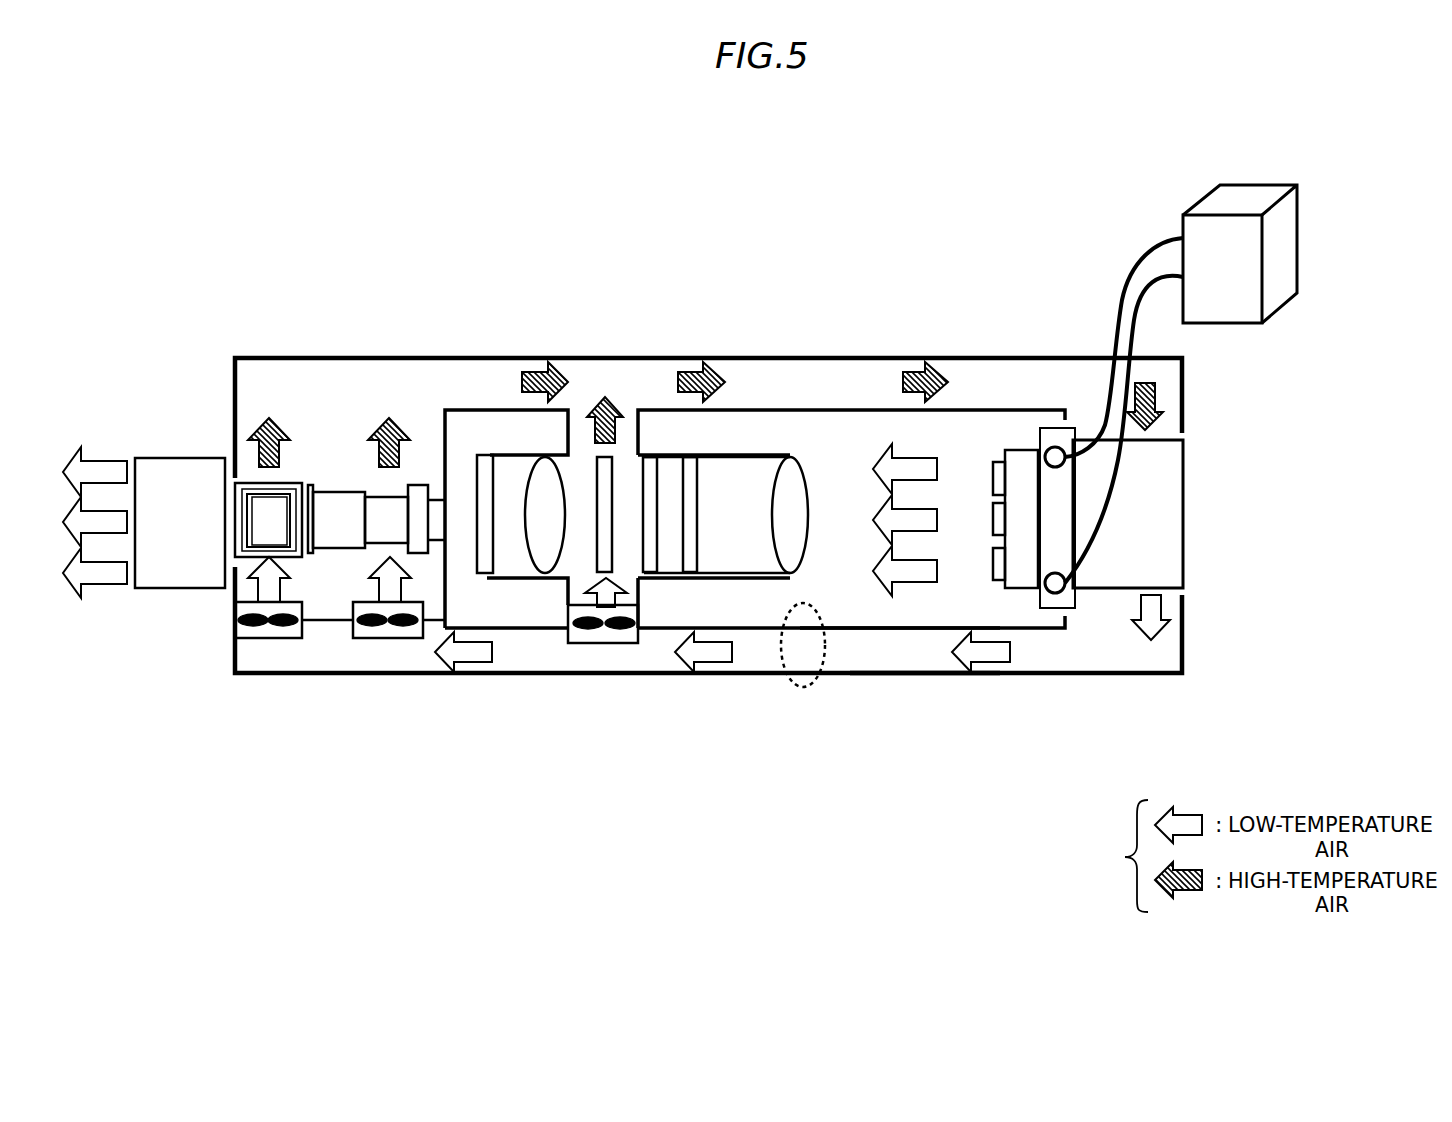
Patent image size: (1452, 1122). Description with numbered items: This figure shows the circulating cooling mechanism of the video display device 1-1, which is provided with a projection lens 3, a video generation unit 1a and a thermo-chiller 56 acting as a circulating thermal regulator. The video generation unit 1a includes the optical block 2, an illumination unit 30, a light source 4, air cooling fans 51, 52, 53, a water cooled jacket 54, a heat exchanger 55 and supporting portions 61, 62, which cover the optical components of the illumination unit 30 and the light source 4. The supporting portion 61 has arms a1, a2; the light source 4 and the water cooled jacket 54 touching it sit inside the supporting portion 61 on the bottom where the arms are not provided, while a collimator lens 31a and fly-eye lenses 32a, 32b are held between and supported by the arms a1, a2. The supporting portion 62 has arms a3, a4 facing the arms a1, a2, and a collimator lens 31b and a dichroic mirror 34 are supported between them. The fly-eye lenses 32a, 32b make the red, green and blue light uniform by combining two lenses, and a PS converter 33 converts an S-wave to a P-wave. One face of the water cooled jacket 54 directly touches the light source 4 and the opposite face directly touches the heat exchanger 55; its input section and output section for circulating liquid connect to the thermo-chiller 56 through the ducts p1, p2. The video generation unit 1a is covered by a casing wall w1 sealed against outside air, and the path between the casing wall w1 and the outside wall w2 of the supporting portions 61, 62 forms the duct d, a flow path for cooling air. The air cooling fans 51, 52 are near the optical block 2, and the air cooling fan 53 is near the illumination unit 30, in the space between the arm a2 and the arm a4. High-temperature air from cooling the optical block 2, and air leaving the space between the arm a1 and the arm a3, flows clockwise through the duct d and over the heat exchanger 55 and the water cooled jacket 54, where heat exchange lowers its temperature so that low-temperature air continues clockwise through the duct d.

The video display device 1-1 is at (310, 168).
The video generation unit 1a is at (234, 358).
The optical block 2 is at (325, 565).
The projection lens 3 is at (167, 590).
The light source 4 is at (1005, 450).
The illumination unit 30 is at (572, 560).
The collimator lens 31a is at (758, 455).
The collimator lens 31b is at (535, 472).
The fly-eye lens 32a is at (683, 457).
The fly-eye lens 32b is at (643, 457).
The PS converter 33 is at (598, 457).
The dichroic mirror 34 is at (477, 462).
The air cooling fan 51 is at (253, 643).
The air cooling fan 52 is at (400, 640).
The air cooling fan 53 is at (583, 645).
The water cooled jacket 54 is at (1050, 428).
The heat exchanger 55 is at (1183, 468).
The thermo-chiller 56 is at (1232, 185).
The supporting portion 61 is at (1038, 630).
The supporting portion 62 is at (440, 410).
The arm a1 is at (735, 412).
The arm a2 is at (665, 630).
The arm a3 is at (510, 412).
The arm a4 is at (513, 630).
The duct d is at (808, 686).
The duct p1 is at (1125, 283).
The duct p2 is at (1148, 333).
The casing wall w1 is at (905, 673).
The outside wall w2 is at (878, 630).